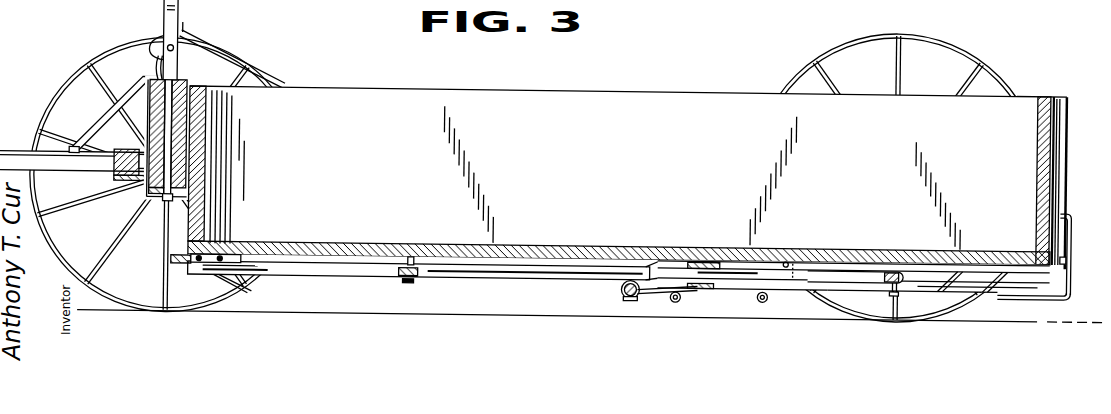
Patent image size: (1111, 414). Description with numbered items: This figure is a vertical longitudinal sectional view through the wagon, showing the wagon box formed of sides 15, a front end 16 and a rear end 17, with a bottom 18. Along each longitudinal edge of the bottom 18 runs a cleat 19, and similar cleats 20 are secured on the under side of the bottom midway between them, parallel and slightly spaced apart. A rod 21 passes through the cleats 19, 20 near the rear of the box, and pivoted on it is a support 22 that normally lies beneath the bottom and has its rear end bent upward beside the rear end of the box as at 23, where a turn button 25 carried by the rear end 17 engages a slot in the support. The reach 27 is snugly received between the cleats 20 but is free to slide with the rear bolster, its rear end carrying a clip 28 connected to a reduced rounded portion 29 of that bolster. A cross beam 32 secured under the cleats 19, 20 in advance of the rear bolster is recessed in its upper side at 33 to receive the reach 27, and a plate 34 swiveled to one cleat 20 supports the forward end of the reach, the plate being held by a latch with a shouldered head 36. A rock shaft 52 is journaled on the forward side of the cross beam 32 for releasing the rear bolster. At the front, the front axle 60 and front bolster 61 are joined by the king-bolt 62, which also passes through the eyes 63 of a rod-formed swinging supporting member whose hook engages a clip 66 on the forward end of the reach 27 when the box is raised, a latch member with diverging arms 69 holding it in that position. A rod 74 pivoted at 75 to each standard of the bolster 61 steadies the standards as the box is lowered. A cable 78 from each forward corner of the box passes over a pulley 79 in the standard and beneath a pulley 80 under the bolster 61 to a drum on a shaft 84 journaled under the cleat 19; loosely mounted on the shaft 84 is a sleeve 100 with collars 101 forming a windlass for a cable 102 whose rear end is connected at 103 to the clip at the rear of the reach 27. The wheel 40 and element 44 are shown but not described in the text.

The sides 15 is at (625, 92).
The front end 16 is at (225, 181).
The rear end 17 is at (1034, 182).
The bottom 18 is at (338, 241).
The cleat 19 is at (1004, 254).
The cleats 20 is at (318, 274).
The rod 21 is at (790, 254).
The support 22 is at (1000, 272).
The upwardly bent rear end of support 23 is at (1074, 204).
The turn button 25 is at (1076, 276).
The reach 27 is at (514, 268).
The clip 28 is at (904, 262).
The reduced rounded portion 29 is at (892, 263).
The cross beam 32 is at (724, 254).
The recess 33 is at (698, 256).
The plate 34 is at (413, 261).
The shouldered head 36 is at (414, 279).
The wheel 40 is at (803, 53).
The roller 44 is at (680, 296).
The rock shaft 52 is at (665, 290).
The front axle 60 is at (207, 162).
The front bolster 61 is at (191, 84).
The king-bolt 62 is at (166, 200).
The eye 63 is at (195, 156).
The clip 66 is at (180, 266).
The diverging arms 69 is at (219, 107).
The rod 74 is at (232, 50).
The pivot 75 is at (180, 16).
The cable 78 is at (158, 64).
The pulley 79 is at (165, 44).
The pulley 80 is at (147, 117).
The shaft 84 is at (626, 283).
The sleeve 100 is at (626, 290).
The collars 101 is at (630, 295).
The cable 102 is at (744, 283).
The connection 103 is at (902, 280).